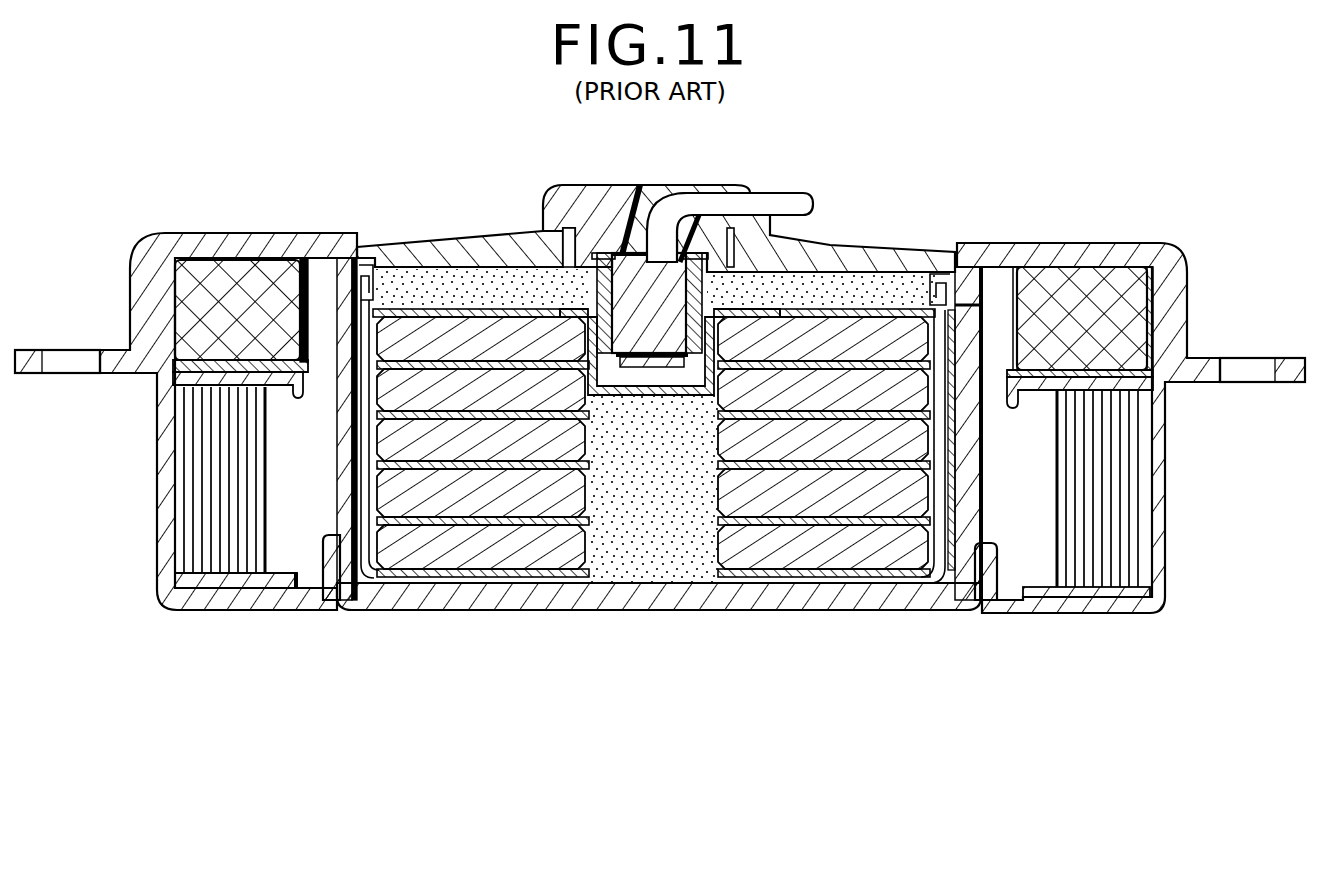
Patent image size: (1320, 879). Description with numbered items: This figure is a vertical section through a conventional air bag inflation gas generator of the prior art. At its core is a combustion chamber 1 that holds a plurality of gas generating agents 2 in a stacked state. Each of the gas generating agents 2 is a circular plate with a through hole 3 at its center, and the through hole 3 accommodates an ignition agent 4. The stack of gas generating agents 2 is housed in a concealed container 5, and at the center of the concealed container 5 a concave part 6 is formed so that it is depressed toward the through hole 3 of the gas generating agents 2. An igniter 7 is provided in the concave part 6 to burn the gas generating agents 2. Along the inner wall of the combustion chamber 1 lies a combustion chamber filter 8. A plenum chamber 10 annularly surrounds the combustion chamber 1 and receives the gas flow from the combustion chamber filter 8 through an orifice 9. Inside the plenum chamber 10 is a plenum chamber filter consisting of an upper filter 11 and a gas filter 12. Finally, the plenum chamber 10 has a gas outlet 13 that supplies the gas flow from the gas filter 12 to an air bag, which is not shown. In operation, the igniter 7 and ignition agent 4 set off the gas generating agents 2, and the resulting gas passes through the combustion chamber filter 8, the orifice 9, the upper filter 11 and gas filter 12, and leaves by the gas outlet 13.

The combustion chamber 1 is at (658, 423).
The gas generating agents 2 is at (424, 337).
The through hole 3 is at (603, 543).
The ignition agent 4 is at (697, 543).
The concealed container 5 is at (655, 596).
The concave part 6 is at (604, 352).
The igniter 7 is at (670, 293).
The combustion chamber filter 8 is at (937, 613).
The orifice 9 is at (347, 308).
The plenum chamber 10 is at (1040, 553).
The upper filter 11 is at (1088, 280).
The gas filter 12 is at (1117, 530).
The gas outlet 13 is at (1153, 497).